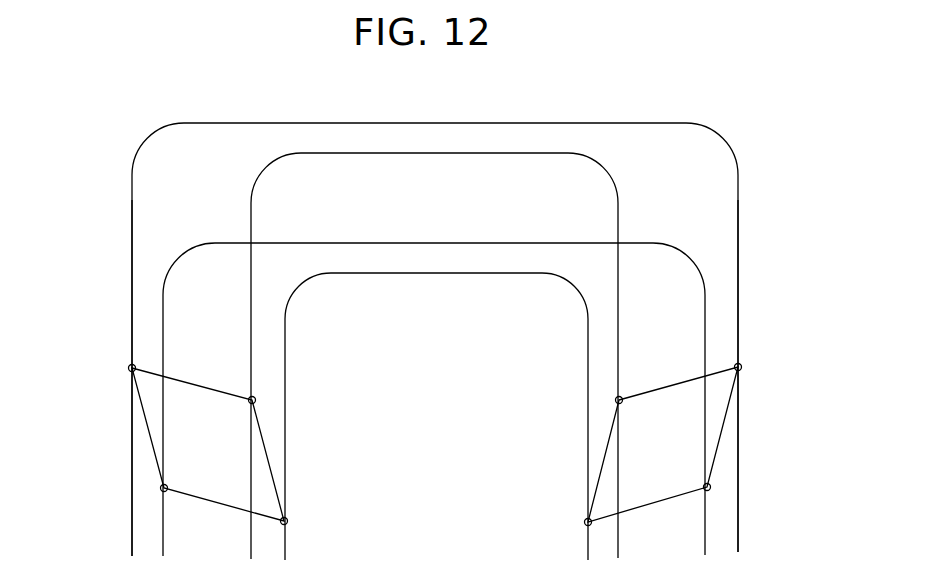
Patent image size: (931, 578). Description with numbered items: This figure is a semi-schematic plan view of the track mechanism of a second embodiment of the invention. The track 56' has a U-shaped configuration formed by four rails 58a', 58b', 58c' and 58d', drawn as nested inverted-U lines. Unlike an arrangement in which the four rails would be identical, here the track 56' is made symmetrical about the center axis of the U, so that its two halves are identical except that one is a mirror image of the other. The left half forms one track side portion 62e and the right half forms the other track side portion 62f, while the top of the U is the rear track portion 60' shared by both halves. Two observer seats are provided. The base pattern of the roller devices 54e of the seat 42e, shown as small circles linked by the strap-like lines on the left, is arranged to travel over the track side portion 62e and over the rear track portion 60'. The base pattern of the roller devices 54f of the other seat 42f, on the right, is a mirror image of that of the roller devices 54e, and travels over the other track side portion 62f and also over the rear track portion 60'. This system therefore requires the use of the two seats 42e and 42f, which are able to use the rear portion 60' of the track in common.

The track 56' is at (435, 308).
The rear track portion 60' is at (435, 128).
The rail 58a' is at (165, 365).
The rail 58b' is at (434, 356).
The rail 58c' is at (436, 416).
The rail 58d' is at (434, 399).
The track side portion 62e is at (123, 273).
The track side portion 62f is at (744, 283).
The roller devices 54e is at (128, 368).
The roller devices 54f is at (622, 399).
The observer seat 42e is at (268, 455).
The observer seat 42f is at (608, 443).